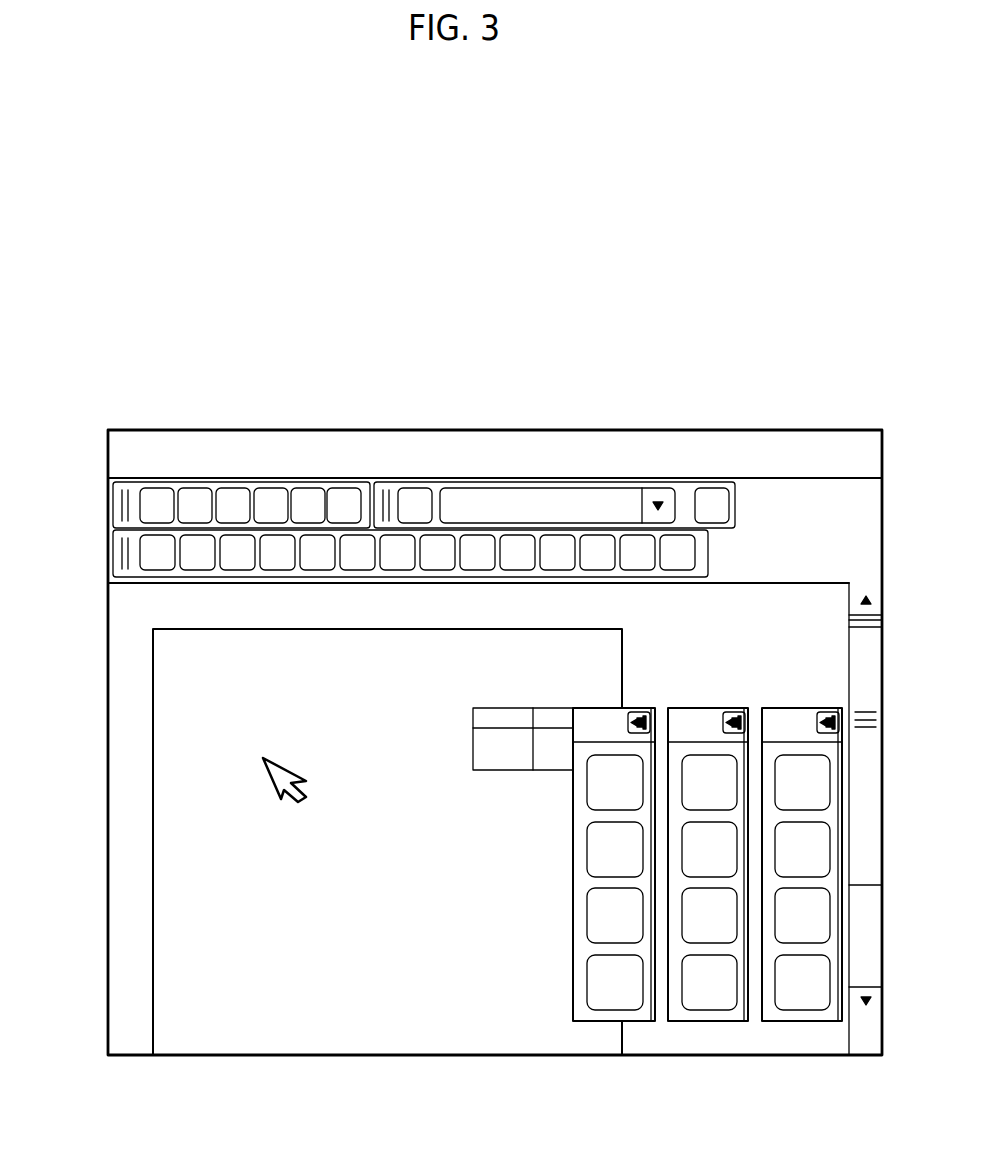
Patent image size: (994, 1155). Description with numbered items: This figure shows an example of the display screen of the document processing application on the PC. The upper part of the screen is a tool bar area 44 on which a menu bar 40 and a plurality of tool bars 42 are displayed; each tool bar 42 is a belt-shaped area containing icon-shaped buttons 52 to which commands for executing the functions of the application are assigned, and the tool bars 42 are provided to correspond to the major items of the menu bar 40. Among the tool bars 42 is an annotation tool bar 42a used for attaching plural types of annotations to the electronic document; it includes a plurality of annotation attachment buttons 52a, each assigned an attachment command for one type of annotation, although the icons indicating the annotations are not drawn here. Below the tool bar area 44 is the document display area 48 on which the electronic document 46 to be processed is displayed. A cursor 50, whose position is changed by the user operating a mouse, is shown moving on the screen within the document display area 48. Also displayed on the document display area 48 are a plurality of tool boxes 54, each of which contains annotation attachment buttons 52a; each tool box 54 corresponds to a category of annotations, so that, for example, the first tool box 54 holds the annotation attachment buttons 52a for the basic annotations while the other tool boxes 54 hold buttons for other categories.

The menu bar 40 is at (92, 463).
The tool bar 42 is at (522, 437).
The annotation tool bar 42a is at (732, 562).
The tool bar area 44 is at (101, 480).
The electronic document 46 is at (622, 663).
The document display area 48 is at (101, 585).
The cursor 50 is at (283, 800).
The button 52 is at (346, 488).
The annotation attachment button 52a is at (598, 537).
The tool box 54 is at (613, 1035).